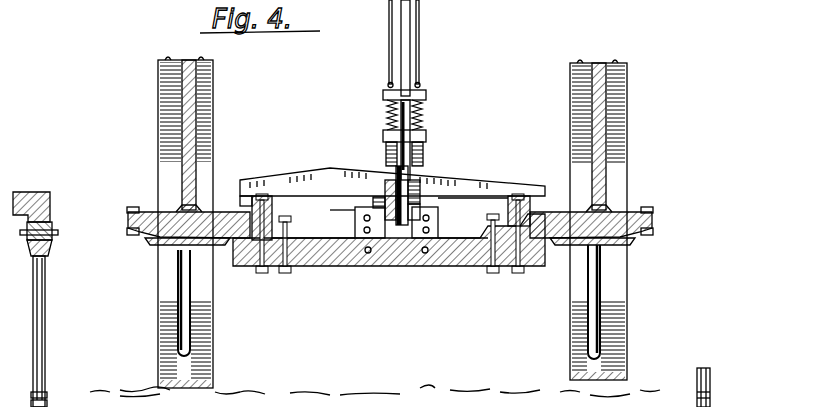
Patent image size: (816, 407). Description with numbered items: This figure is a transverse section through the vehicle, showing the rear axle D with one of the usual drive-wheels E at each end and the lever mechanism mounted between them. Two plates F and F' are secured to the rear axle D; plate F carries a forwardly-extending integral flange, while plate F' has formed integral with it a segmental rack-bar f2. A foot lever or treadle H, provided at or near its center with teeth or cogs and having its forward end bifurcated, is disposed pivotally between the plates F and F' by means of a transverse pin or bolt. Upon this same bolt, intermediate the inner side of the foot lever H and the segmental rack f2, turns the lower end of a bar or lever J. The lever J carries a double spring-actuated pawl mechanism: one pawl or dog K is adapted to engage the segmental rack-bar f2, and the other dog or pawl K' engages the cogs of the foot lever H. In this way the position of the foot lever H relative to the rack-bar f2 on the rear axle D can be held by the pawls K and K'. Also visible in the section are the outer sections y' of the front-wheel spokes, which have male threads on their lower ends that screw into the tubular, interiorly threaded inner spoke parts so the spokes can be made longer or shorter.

The drive-wheel E is at (378, 222).
The rear axle D is at (395, 267).
The foot lever H is at (392, 190).
The plate F is at (374, 221).
The plate F' is at (417, 183).
The segmental rack-bar f2 is at (418, 205).
The bar or lever J is at (406, 48).
The pawl K is at (418, 135).
The pawl K' is at (371, 115).
The outer spoke section y' is at (380, 299).